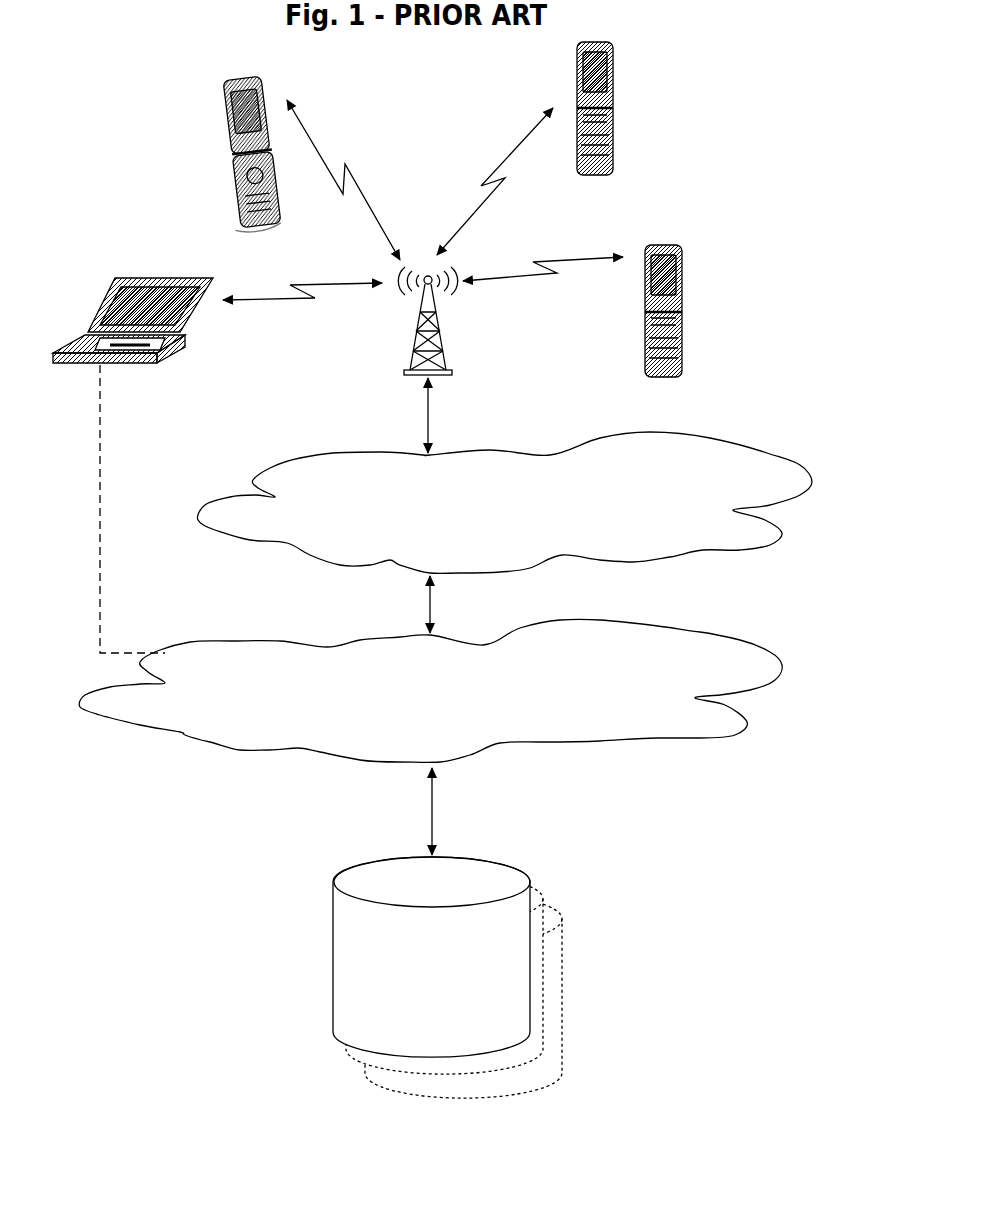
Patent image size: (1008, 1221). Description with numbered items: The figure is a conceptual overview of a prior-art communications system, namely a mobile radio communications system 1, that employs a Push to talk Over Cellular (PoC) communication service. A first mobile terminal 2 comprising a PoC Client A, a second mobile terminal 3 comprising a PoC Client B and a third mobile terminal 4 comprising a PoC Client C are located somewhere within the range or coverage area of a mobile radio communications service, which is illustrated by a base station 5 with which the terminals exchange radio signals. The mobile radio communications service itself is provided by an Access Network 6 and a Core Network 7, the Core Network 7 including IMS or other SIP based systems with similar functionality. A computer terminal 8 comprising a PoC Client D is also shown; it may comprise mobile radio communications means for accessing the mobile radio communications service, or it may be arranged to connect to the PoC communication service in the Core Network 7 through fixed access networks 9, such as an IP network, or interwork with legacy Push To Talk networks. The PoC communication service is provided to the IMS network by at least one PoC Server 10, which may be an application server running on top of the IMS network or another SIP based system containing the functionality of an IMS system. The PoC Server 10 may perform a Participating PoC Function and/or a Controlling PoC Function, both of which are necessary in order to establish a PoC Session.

The mobile radio communications system 1 is at (738, 117).
The first mobile terminal 2 is at (217, 102).
The second mobile terminal 3 is at (622, 56).
The third mobile terminal 4 is at (687, 262).
The base station 5 is at (453, 365).
The Access Network 6 is at (783, 458).
The Core Network 7 is at (738, 640).
The computer terminal 8 is at (135, 278).
The fixed access networks 9 is at (105, 592).
The PoC Server 10 is at (535, 890).